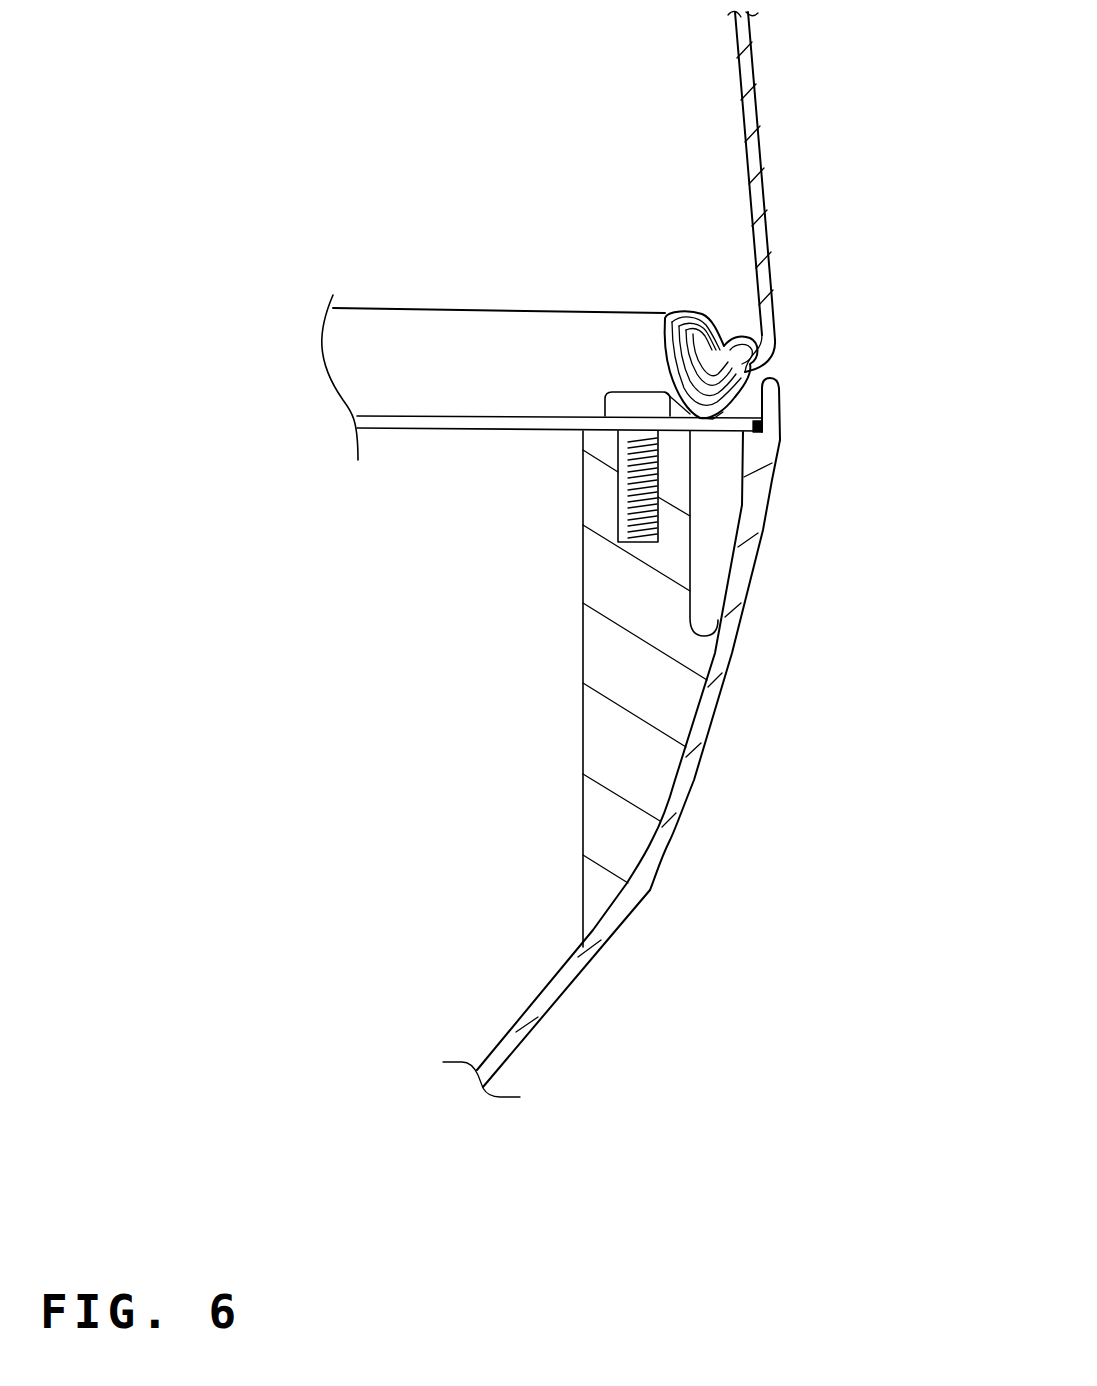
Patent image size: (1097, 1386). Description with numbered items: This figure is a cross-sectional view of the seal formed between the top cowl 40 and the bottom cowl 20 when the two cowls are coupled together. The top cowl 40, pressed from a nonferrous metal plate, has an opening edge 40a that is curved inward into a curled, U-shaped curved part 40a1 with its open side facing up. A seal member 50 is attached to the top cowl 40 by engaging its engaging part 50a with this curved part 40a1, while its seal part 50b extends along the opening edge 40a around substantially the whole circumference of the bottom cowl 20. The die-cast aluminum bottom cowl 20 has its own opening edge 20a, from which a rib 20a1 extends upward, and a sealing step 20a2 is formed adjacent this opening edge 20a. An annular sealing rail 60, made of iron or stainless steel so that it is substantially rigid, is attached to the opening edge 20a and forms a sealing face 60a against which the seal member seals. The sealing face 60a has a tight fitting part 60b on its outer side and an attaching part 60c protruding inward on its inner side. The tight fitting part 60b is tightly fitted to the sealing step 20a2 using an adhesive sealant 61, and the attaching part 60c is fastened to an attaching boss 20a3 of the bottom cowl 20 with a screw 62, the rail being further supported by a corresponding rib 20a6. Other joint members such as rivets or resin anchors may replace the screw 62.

The bottom cowl 20 is at (679, 725).
The opening edge 20a is at (712, 688).
The rib 20a1 is at (776, 403).
The sealing step 20a2 is at (738, 432).
The attaching boss 20a3 is at (613, 613).
The rib 20a6 is at (703, 600).
The top cowl 40 is at (768, 163).
The opening edge 40a is at (748, 77).
The curved part 40a1 is at (730, 332).
The seal member 50 is at (634, 303).
The engaging part 50a is at (673, 313).
The seal part 50b is at (718, 432).
The annular sealing rail 60 is at (551, 451).
The sealing face 60a is at (665, 392).
The tight fitting part 60b is at (757, 441).
The attaching part 60c is at (597, 417).
The adhesive sealant 61 is at (767, 427).
The screw 62 is at (617, 526).